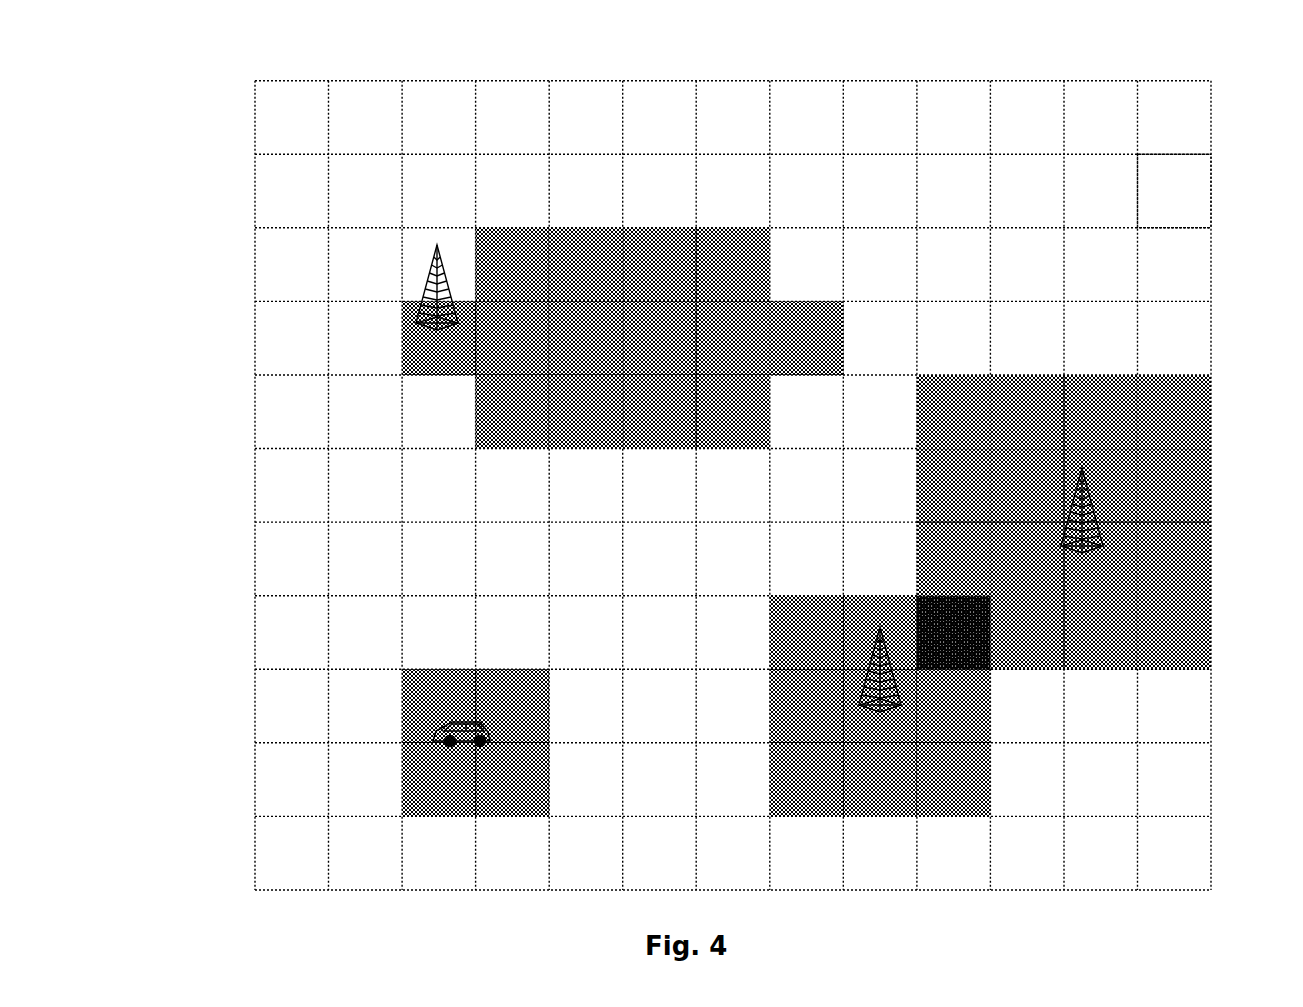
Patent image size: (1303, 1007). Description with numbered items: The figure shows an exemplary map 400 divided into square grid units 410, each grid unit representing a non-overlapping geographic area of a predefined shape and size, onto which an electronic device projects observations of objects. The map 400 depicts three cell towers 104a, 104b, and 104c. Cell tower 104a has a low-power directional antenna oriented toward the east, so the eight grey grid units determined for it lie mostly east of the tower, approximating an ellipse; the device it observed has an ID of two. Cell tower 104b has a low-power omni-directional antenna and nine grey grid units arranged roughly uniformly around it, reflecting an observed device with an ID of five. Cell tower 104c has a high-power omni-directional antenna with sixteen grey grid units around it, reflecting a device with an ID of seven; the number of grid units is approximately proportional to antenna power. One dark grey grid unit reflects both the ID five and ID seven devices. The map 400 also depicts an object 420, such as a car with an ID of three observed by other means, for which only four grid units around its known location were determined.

The map 400 is at (235, 79).
The square grid unit 410 is at (1197, 186).
The cell tower 104a is at (420, 288).
The cell tower 104b is at (858, 681).
The cell tower 104c is at (1104, 530).
The object 420 is at (447, 720).